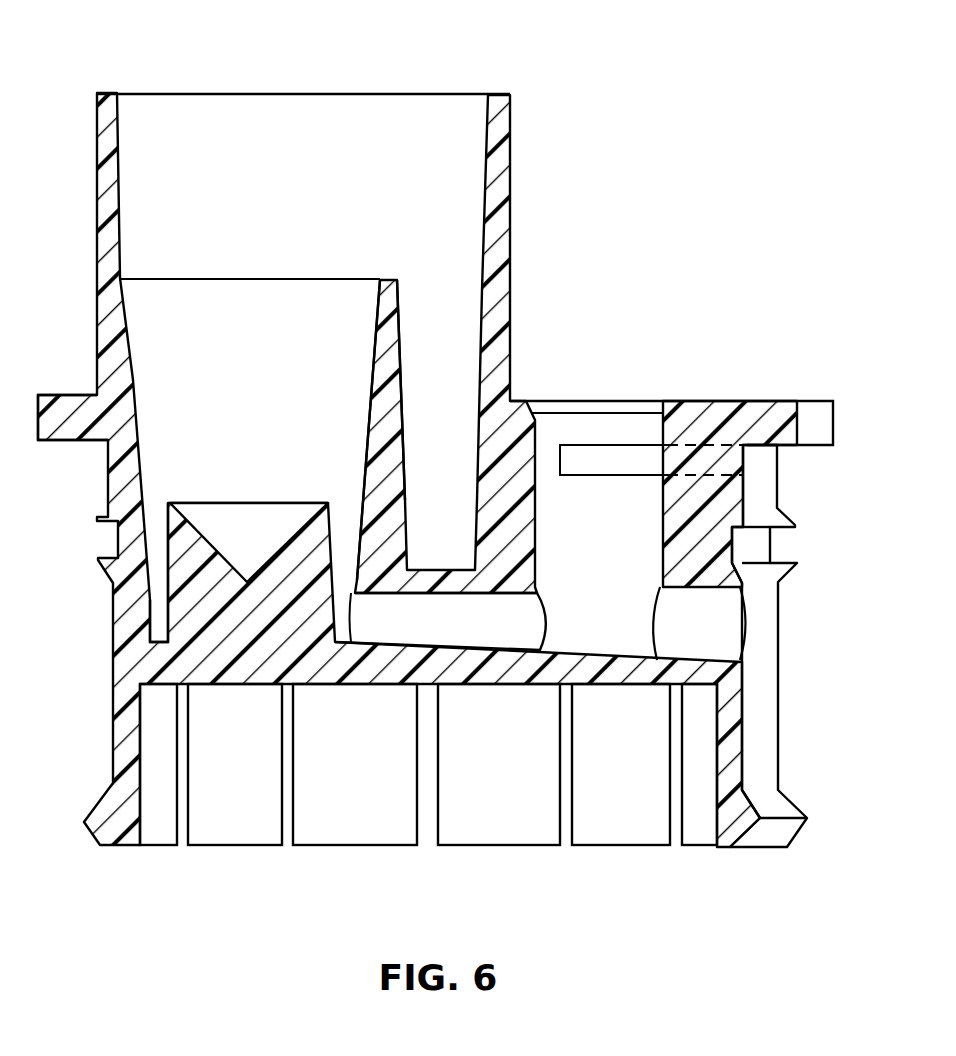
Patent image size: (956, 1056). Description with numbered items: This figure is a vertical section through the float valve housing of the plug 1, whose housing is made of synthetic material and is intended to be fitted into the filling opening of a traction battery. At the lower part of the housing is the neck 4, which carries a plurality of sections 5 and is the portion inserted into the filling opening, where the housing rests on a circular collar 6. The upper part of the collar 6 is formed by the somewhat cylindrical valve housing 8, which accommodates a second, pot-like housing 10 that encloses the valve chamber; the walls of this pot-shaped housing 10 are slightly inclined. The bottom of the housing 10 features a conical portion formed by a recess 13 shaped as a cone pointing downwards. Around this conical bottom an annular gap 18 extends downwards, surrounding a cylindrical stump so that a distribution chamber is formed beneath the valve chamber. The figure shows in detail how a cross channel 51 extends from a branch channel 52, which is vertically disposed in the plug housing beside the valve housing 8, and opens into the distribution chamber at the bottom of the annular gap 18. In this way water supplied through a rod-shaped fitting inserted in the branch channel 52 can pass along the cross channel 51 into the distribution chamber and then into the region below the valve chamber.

The plug 1 is at (663, 89).
The neck 4 is at (778, 758).
The sections 5 is at (243, 822).
The collar 6 is at (67, 413).
The valve housing 8 is at (498, 183).
The pot-like housing 10 is at (386, 328).
The recess 13 is at (233, 517).
The annular gap 18 is at (158, 598).
The cross channel 51 is at (389, 640).
The branch channel 52 is at (556, 432).